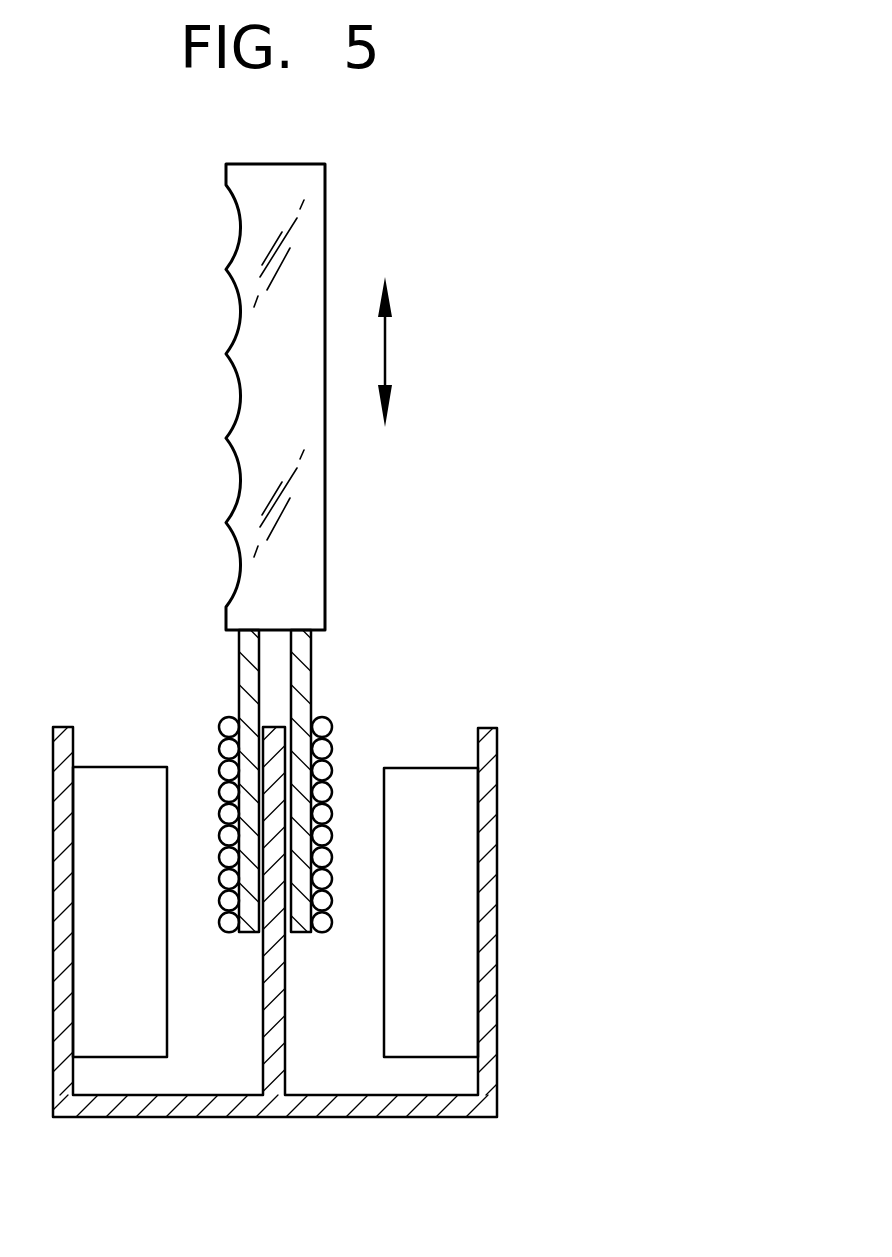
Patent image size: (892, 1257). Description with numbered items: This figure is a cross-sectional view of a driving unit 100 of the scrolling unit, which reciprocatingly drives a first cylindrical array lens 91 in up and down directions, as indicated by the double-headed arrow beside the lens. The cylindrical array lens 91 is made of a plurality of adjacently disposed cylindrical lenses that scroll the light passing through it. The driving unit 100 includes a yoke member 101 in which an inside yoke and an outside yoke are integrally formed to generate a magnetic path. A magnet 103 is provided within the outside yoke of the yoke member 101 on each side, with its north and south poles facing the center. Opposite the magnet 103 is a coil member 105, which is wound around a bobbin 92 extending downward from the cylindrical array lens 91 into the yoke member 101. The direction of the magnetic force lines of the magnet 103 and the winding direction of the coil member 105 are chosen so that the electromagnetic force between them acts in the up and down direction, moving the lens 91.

The first cylindrical array lens 91 is at (318, 205).
The bobbin 92 is at (253, 677).
The coil member 105 is at (333, 721).
The magnet 103 is at (425, 777).
The yoke member 101 is at (497, 997).
The first driving unit 100 is at (548, 805).